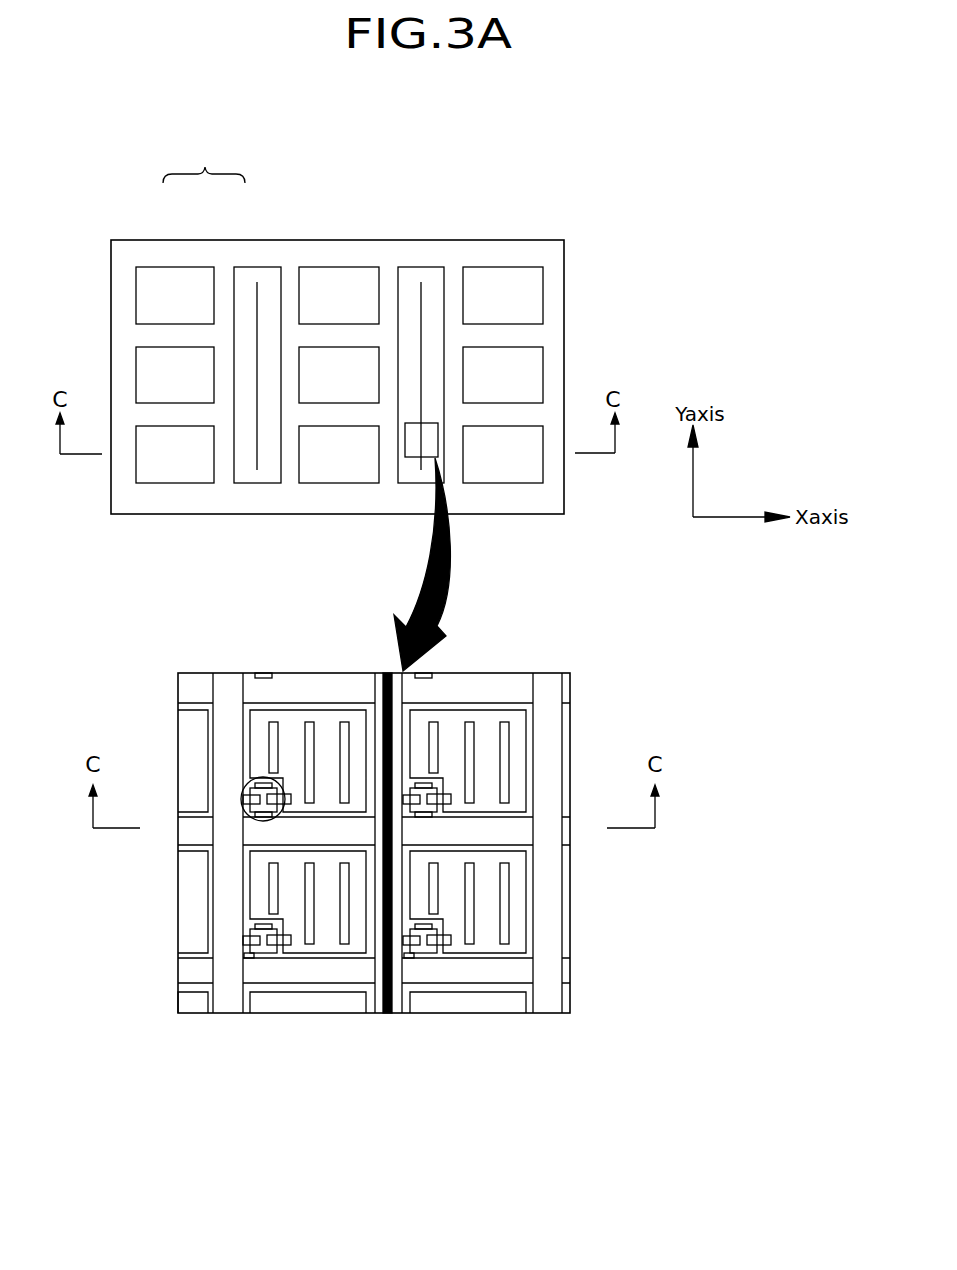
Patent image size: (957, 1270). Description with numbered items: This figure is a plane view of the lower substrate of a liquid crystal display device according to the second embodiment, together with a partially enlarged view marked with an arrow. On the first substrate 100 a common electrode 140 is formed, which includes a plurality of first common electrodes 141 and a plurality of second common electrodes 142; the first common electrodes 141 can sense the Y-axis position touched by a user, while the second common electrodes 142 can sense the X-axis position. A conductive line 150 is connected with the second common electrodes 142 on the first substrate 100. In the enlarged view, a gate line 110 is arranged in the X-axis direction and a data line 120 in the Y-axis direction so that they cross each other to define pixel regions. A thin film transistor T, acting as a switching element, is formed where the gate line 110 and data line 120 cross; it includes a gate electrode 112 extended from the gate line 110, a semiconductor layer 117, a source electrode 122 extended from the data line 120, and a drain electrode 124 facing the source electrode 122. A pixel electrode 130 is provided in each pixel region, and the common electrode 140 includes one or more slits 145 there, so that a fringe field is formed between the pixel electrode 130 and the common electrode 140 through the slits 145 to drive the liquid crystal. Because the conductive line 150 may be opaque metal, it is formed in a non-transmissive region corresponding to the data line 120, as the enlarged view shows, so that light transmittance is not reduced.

The first substrate 100 is at (565, 264).
The common electrode 140 is at (570, 722).
The first common electrodes 141 is at (156, 267).
The second common electrodes 142 is at (239, 267).
The conductive line 150 is at (259, 289).
The gate line 110 is at (483, 983).
The data line 120 is at (213, 931).
The pixel electrode 130 is at (250, 767).
The slits 145 is at (344, 727).
The semiconductor layer 117 is at (283, 800).
The drain electrode 124 is at (289, 795).
The source electrode 122 is at (245, 797).
The gate electrode 112 is at (263, 817).
The thin film transistor T is at (243, 804).